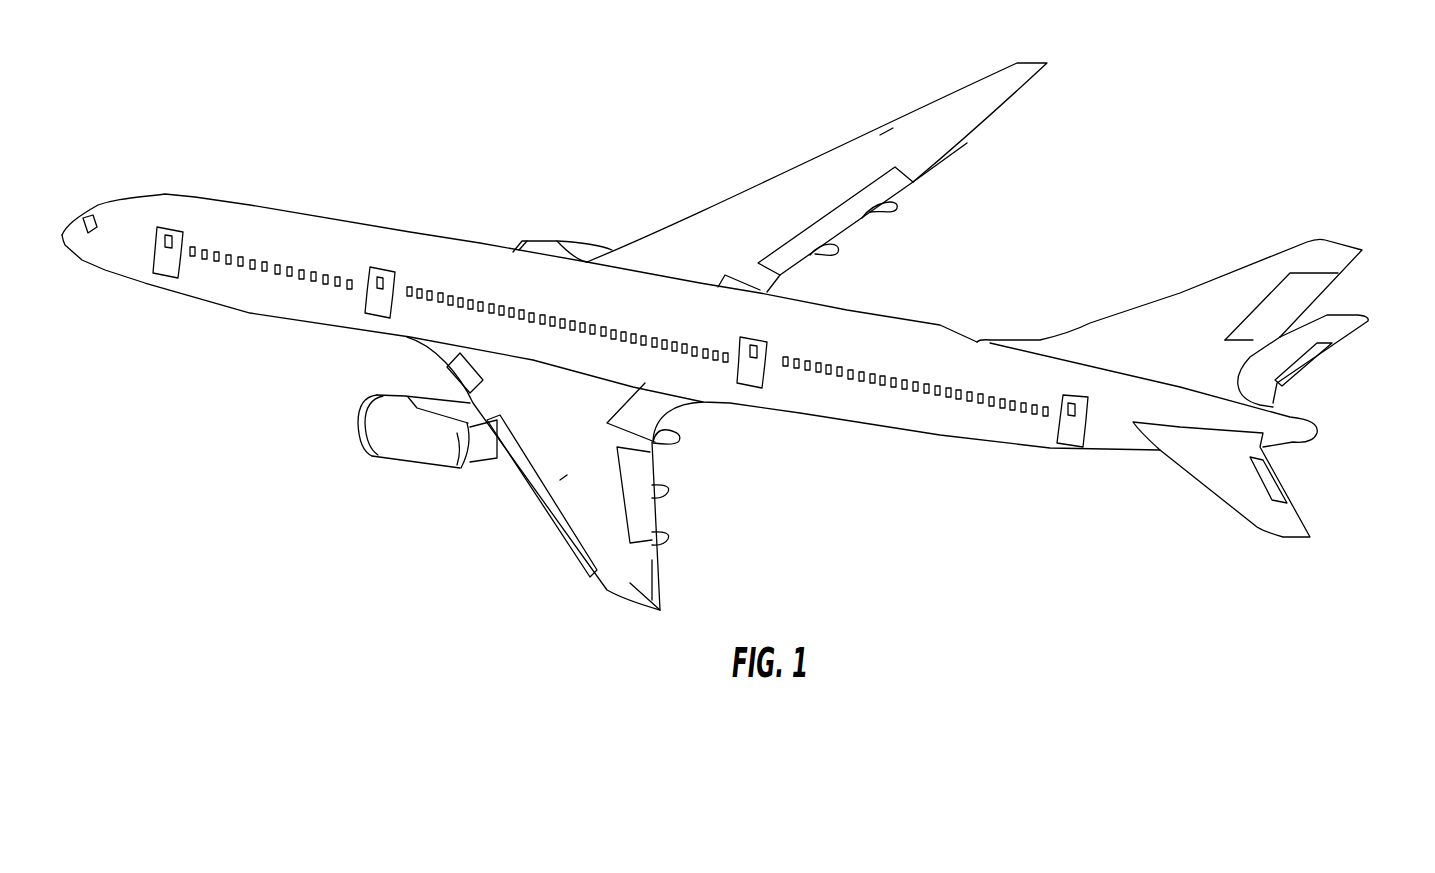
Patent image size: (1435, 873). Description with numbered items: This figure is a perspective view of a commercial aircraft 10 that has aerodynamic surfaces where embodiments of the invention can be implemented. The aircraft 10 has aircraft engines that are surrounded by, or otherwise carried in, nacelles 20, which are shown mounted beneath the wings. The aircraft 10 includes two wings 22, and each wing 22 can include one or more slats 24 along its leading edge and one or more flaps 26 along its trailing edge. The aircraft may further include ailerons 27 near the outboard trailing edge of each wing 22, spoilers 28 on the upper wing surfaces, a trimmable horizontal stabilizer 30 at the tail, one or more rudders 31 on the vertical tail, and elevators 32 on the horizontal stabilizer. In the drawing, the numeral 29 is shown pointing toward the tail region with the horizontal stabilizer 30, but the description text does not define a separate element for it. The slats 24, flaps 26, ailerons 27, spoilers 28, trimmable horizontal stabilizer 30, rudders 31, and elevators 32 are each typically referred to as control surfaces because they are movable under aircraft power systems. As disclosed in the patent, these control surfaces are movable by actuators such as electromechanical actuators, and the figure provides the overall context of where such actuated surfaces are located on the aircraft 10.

The commercial aircraft 10 is at (1132, 153).
The nacelle 20 is at (541, 245).
The wing 22 is at (827, 172).
The slat 24 is at (563, 527).
The flap 26 is at (863, 217).
The aileron 27 is at (967, 143).
The spoiler 28 is at (893, 128).
The empennage 29 is at (1187, 487).
The trimmable horizontal stabilizer 30 is at (1280, 519).
The rudder 31 is at (1280, 300).
The elevator 32 is at (1312, 373).